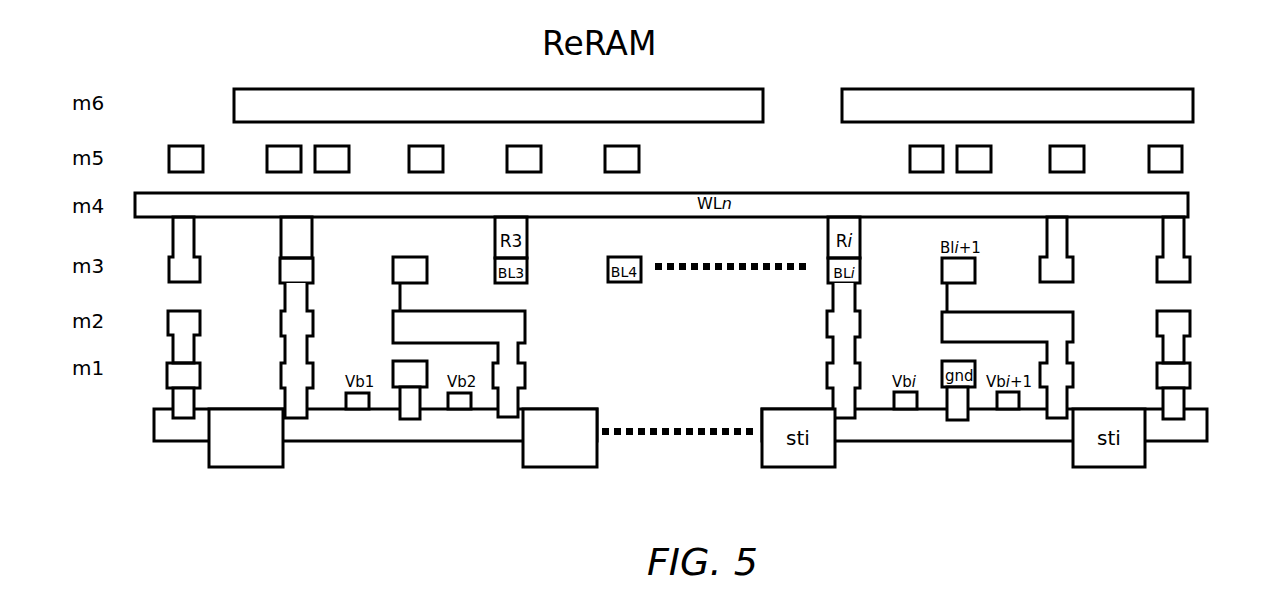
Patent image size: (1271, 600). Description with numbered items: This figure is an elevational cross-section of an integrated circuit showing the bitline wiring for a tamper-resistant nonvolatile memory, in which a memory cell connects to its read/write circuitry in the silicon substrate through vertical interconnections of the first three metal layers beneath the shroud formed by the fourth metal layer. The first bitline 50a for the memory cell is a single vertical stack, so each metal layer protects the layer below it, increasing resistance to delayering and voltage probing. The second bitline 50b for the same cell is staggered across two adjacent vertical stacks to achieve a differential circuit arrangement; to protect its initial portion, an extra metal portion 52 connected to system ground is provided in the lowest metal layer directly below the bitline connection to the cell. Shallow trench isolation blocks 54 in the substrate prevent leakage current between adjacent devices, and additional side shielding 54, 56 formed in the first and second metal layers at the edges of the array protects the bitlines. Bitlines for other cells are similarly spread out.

The first bitline 50a is at (280, 367).
The second bitline 50b is at (525, 323).
The extra metal portion 52 is at (410, 419).
The shallow trench isolation blocks 54 is at (168, 369).
The side shielding 56 is at (1190, 366).